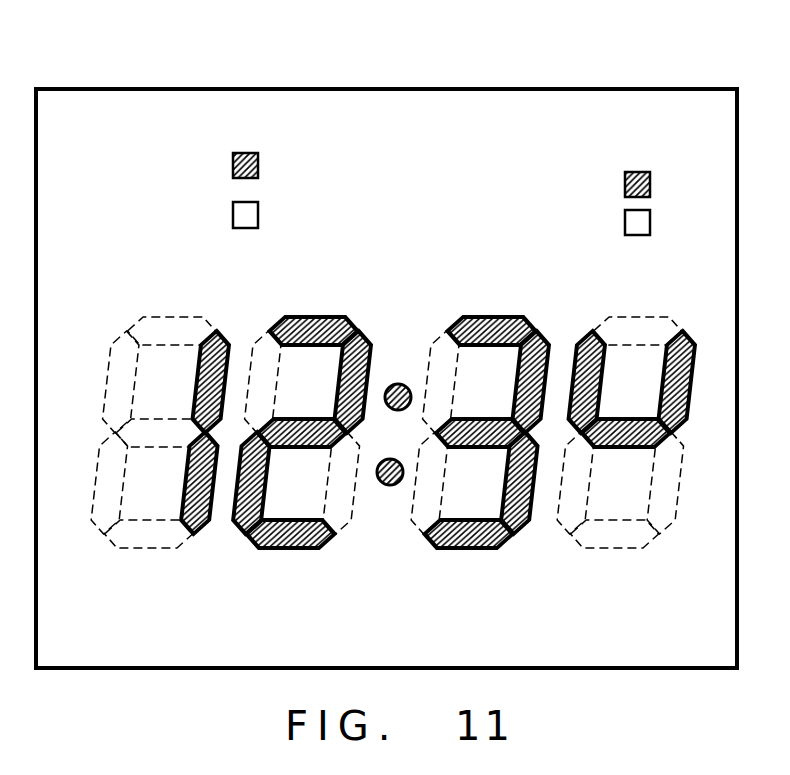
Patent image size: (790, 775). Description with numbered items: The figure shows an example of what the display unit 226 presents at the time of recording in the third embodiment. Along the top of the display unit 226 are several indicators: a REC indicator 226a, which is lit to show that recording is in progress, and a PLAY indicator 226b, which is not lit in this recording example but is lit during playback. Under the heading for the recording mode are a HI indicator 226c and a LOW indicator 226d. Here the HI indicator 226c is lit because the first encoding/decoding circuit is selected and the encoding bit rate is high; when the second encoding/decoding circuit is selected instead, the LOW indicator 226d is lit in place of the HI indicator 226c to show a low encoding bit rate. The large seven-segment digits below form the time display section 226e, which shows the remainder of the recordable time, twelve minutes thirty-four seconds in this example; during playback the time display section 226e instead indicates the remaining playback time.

The display unit 226 is at (413, 87).
The REC indicator 226a is at (258, 165).
The PLAY indicator 226b is at (258, 214).
The HI indicator 226c is at (650, 185).
The LOW indicator 226d is at (650, 225).
The time display section 226e is at (705, 563).